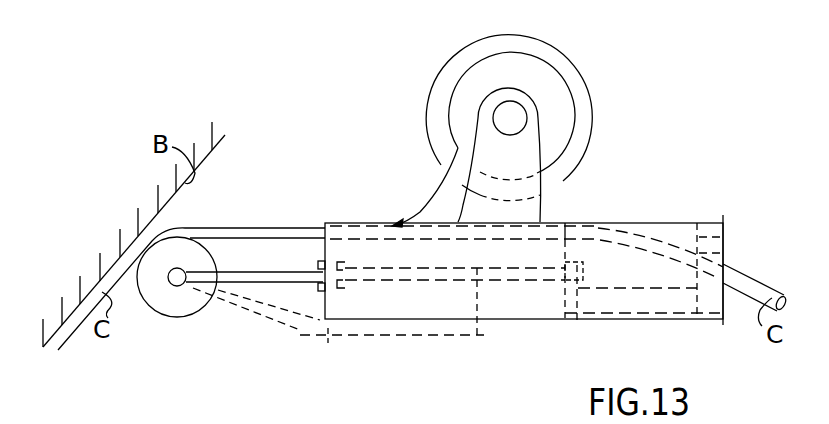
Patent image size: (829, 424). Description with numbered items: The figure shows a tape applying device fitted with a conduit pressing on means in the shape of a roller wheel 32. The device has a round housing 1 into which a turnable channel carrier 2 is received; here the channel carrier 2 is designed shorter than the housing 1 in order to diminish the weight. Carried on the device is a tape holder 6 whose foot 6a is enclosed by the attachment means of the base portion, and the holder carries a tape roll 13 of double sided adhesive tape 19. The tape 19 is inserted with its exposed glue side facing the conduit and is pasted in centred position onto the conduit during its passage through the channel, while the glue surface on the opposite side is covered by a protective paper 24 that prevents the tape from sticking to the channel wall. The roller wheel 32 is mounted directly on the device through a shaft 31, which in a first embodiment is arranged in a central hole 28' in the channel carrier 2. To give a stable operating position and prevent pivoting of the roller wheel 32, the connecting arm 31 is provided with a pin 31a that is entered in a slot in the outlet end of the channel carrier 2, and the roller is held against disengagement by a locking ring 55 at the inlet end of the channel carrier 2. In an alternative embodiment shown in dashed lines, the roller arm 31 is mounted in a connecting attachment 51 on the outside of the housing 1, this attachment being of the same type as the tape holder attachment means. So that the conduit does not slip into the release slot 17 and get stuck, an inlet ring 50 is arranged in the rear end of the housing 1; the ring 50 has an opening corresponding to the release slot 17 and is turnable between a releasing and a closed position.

The housing 1 is at (553, 322).
The channel carrier 2 is at (372, 312).
The tape holder 6 is at (568, 52).
The foot of the tape holder 6a is at (528, 208).
The tape roll 13 is at (563, 117).
The release slot 17 is at (640, 300).
The double sided adhesive tape 19 is at (433, 198).
The protective paper 24 is at (310, 153).
The central hole 28' is at (508, 341).
The shaft 31 is at (288, 276).
The pin 31a is at (322, 291).
The roller wheel 32 is at (175, 306).
The inlet ring 50 is at (705, 320).
The connecting attachment 51 is at (410, 340).
The locking ring 55 is at (575, 330).